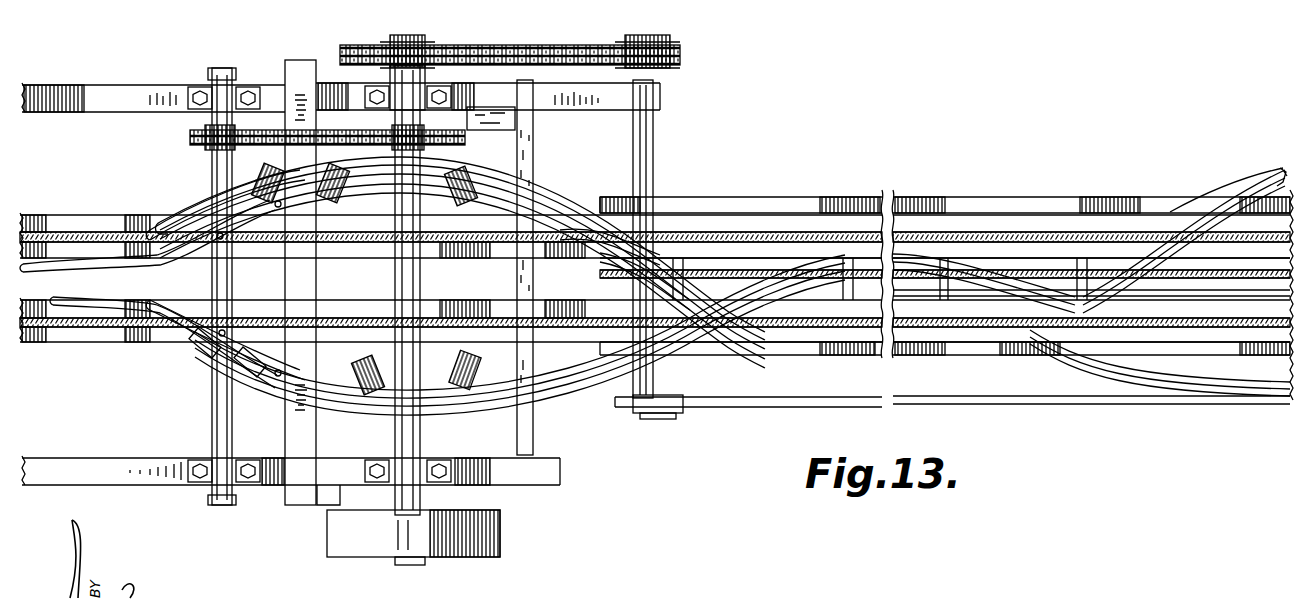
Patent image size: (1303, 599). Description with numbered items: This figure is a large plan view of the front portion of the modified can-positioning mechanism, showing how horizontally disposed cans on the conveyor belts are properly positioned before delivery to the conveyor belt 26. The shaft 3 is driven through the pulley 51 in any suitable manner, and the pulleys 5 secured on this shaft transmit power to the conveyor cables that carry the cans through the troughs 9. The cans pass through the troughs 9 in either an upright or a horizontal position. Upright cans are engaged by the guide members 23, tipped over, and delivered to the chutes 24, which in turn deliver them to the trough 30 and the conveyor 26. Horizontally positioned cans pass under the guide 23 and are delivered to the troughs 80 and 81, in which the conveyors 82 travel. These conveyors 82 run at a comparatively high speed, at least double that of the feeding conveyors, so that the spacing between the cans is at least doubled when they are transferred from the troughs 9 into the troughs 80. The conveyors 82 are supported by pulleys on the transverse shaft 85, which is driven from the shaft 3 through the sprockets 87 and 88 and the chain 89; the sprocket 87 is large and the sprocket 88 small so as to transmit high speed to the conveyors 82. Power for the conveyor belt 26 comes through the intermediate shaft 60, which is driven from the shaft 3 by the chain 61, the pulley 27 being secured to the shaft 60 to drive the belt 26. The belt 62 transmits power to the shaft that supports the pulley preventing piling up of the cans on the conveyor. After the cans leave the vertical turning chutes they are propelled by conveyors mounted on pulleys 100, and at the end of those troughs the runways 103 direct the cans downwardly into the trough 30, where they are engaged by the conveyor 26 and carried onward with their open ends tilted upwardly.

The shaft 3 is at (420, 427).
The pulleys 5 is at (398, 228).
The troughs 9 is at (66, 216).
The guide members 23 is at (152, 255).
The chutes 24 is at (300, 395).
The conveyor belt 26 is at (928, 285).
The pulley 27 is at (600, 242).
The trough 30 is at (1187, 283).
The pulley 51 is at (500, 535).
The intermediate shaft 60 is at (654, 142).
The chain 61 is at (553, 22).
The belt 62 is at (815, 402).
The troughs 80 is at (830, 215).
The troughs 81 is at (867, 343).
The conveyors 82 is at (975, 232).
The shaft 85 is at (215, 172).
The sprocket 87 is at (533, 150).
The sprocket 88 is at (200, 148).
The chain 89 is at (265, 130).
The pulleys 100 is at (1283, 178).
The runways 103 is at (1207, 185).